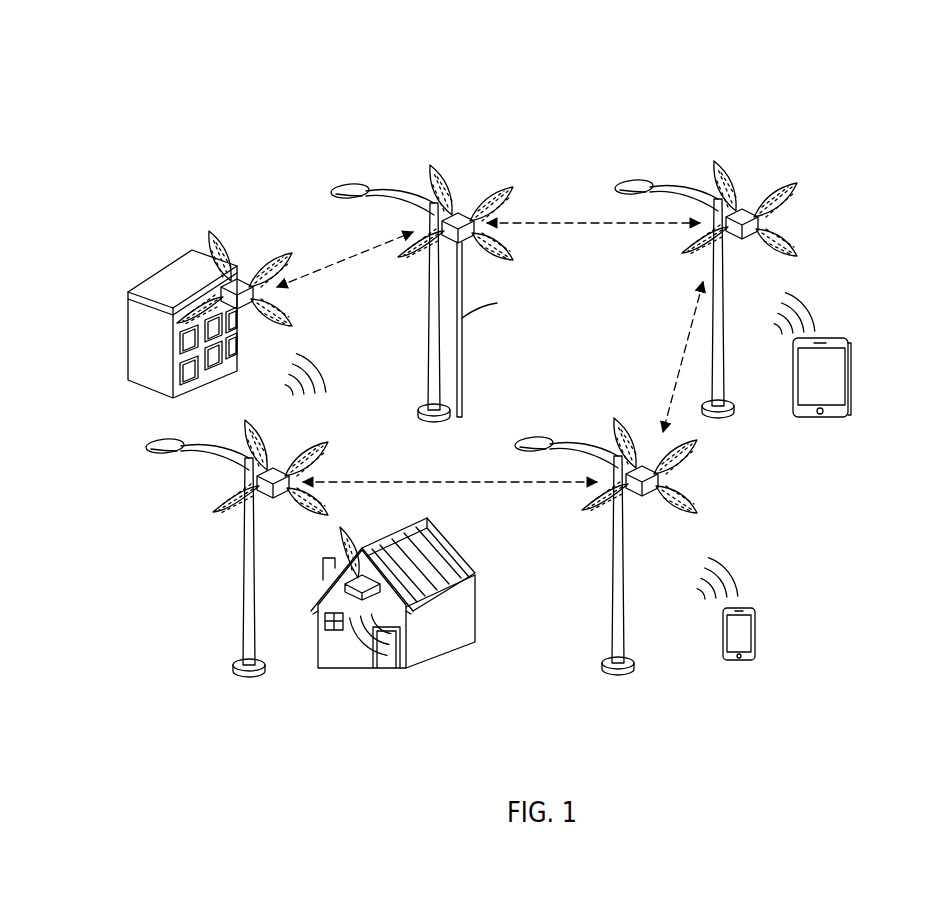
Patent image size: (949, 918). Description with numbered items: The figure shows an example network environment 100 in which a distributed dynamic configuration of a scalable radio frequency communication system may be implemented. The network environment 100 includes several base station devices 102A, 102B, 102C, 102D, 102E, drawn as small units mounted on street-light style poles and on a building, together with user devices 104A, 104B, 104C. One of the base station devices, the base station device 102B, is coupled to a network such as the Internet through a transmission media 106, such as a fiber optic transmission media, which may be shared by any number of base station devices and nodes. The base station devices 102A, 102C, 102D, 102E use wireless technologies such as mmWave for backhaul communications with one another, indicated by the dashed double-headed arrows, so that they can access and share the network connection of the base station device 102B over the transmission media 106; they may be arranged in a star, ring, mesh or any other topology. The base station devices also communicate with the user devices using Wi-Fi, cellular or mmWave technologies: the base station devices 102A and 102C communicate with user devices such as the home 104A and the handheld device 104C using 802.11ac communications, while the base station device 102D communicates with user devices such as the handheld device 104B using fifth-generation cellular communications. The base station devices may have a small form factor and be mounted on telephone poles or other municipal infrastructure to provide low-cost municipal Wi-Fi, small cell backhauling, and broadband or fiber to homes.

The network environment 100 is at (185, 47).
The base station device 102A is at (242, 282).
The base station device 102B is at (460, 212).
The base station device 102C is at (747, 210).
The base station device 102D is at (655, 480).
The base station device 102E is at (277, 472).
The user device 104A is at (375, 547).
The user device 104B is at (757, 633).
The user device 104C is at (850, 373).
The transmission media 106 is at (457, 388).